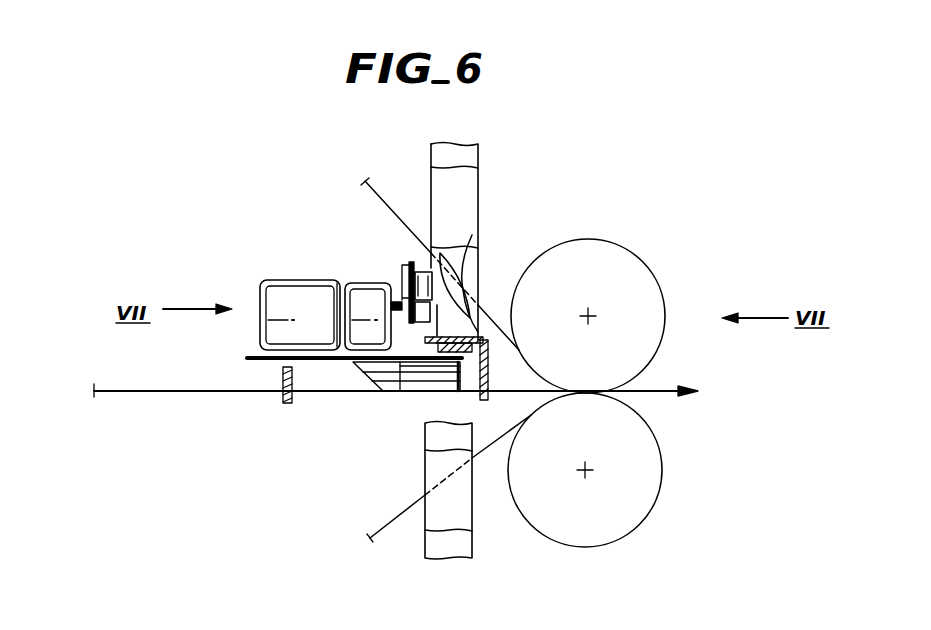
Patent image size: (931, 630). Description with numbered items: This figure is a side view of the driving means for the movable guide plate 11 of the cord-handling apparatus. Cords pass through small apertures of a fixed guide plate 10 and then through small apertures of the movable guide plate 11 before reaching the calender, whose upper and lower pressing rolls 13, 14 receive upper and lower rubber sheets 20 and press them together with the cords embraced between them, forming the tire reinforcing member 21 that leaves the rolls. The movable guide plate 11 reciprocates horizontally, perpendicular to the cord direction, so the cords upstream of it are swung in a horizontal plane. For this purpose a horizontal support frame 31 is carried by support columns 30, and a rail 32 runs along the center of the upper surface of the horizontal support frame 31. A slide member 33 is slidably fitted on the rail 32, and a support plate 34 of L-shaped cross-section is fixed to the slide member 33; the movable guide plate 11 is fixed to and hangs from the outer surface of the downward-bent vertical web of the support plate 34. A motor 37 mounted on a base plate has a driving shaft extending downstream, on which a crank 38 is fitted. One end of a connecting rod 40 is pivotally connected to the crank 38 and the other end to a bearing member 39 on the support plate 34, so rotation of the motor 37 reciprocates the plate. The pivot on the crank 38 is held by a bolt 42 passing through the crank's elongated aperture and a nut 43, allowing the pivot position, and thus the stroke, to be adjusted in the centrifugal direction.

The guide plate 10 is at (285, 405).
The movable guide plate 11 is at (488, 400).
The upper pressing roll 13 is at (644, 262).
The lower pressing roll 14 is at (633, 533).
The rubber sheets 20 is at (375, 181).
The tire reinforcing member 21 is at (670, 390).
The support columns 30 is at (478, 181).
The horizontal support frame 31 is at (430, 386).
The rail 32 is at (428, 376).
The slide member 33 is at (412, 372).
The support plate 34 is at (481, 337).
The motor 37 is at (278, 280).
The crank 38 is at (410, 265).
The bearing member 39 is at (480, 250).
The connecting rod 40 is at (412, 262).
The bolt 42 is at (472, 235).
The nut 43 is at (403, 280).